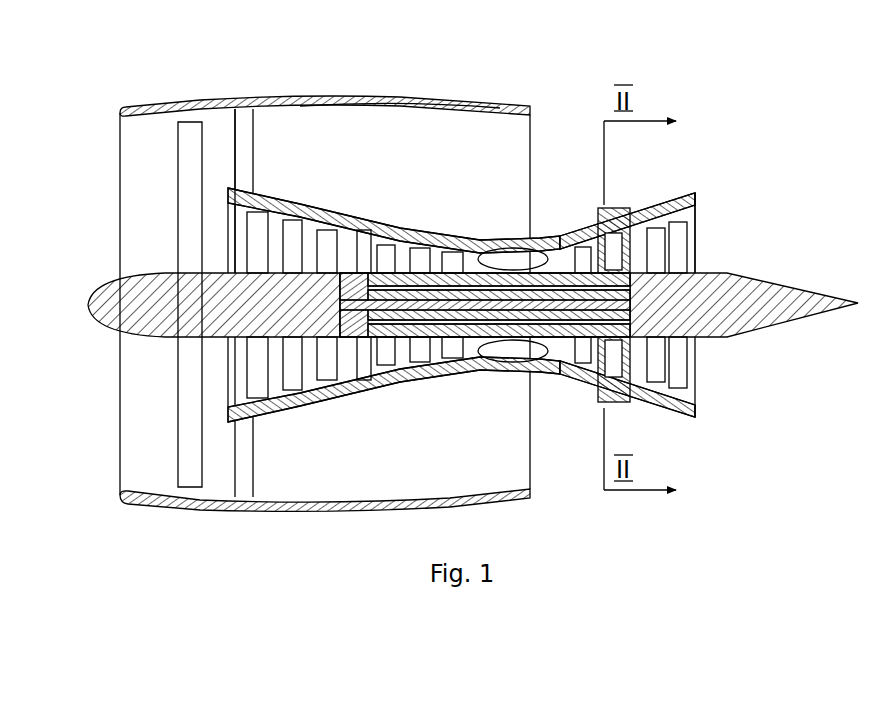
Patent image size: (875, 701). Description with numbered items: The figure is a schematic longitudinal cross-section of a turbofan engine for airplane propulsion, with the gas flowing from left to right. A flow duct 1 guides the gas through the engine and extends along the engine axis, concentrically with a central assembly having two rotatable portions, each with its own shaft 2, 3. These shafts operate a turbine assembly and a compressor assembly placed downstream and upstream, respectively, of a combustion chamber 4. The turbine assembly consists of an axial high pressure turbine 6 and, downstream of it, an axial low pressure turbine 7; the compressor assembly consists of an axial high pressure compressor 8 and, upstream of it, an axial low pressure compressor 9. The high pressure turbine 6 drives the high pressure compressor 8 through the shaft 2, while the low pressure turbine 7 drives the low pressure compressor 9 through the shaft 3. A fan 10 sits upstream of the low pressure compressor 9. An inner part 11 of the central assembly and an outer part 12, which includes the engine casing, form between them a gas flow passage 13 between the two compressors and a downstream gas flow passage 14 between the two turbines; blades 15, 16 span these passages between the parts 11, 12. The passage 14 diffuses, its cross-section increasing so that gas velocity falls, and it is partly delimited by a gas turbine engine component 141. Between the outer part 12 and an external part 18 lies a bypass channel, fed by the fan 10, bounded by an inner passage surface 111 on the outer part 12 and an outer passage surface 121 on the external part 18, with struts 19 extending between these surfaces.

The flow duct 1 is at (438, 247).
The shaft 2 is at (452, 373).
The shaft 3 is at (747, 332).
The combustion chamber 4 is at (515, 252).
The axial high pressure turbine 6 is at (588, 370).
The axial low pressure turbine 7 is at (715, 238).
The axial high pressure compressor 8 is at (419, 154).
The axial low pressure compressor 9 is at (234, 250).
The fan 10 is at (178, 451).
The inner part 11 is at (408, 362).
The outer part 12 is at (296, 197).
The gas flow passage 13 is at (368, 250).
The downstream gas flow passage 14 is at (593, 365).
The blades 15 is at (357, 372).
The blades 16 is at (623, 392).
The external part 18 is at (270, 98).
The struts 19 is at (226, 135).
The inner passage surface 111 is at (287, 408).
The outer passage surface 121 is at (320, 108).
The gas turbine engine component 141 is at (586, 232).